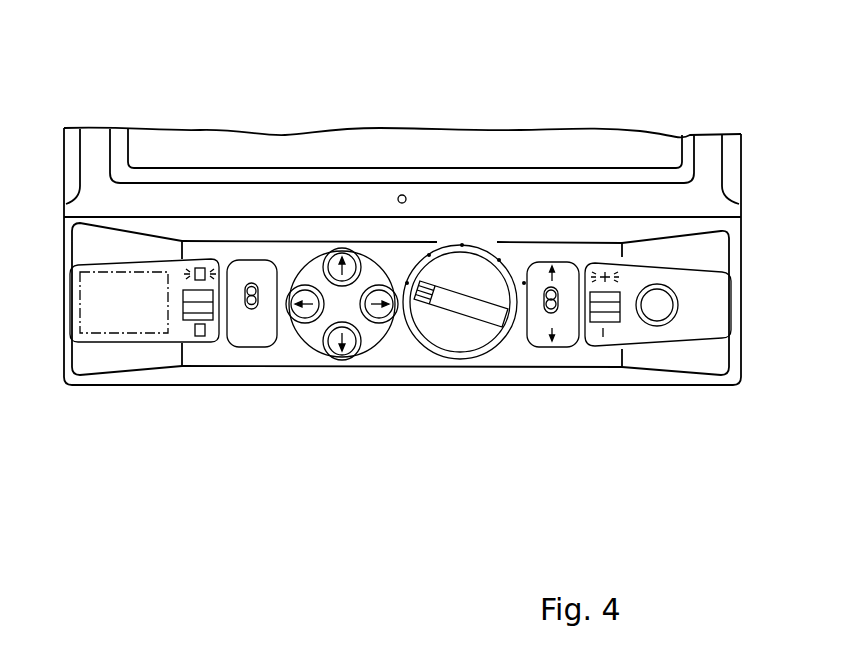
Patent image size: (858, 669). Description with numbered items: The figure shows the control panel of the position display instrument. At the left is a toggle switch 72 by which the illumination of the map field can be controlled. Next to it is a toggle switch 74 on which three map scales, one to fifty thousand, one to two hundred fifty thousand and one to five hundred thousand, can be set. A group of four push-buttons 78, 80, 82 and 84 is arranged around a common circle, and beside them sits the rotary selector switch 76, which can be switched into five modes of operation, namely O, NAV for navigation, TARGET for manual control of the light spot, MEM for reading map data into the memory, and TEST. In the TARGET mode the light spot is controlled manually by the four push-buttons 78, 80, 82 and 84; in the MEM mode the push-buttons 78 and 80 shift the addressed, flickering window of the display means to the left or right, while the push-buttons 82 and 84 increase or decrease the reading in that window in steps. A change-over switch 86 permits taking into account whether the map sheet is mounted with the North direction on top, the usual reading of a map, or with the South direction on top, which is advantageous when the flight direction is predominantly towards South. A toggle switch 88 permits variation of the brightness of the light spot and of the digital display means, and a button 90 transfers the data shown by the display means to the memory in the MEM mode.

The toggle switch 72 is at (193, 260).
The range selector panel (500/250/50) 74 is at (265, 262).
The rotary selector switch 76 is at (447, 272).
The push-button 78 is at (301, 312).
The push-button 80 is at (380, 313).
The push-button 82 is at (342, 272).
The push-button 84 is at (349, 342).
The change-over switch 86 is at (551, 263).
The toggle switch 88 is at (707, 278).
The button 90 is at (671, 304).